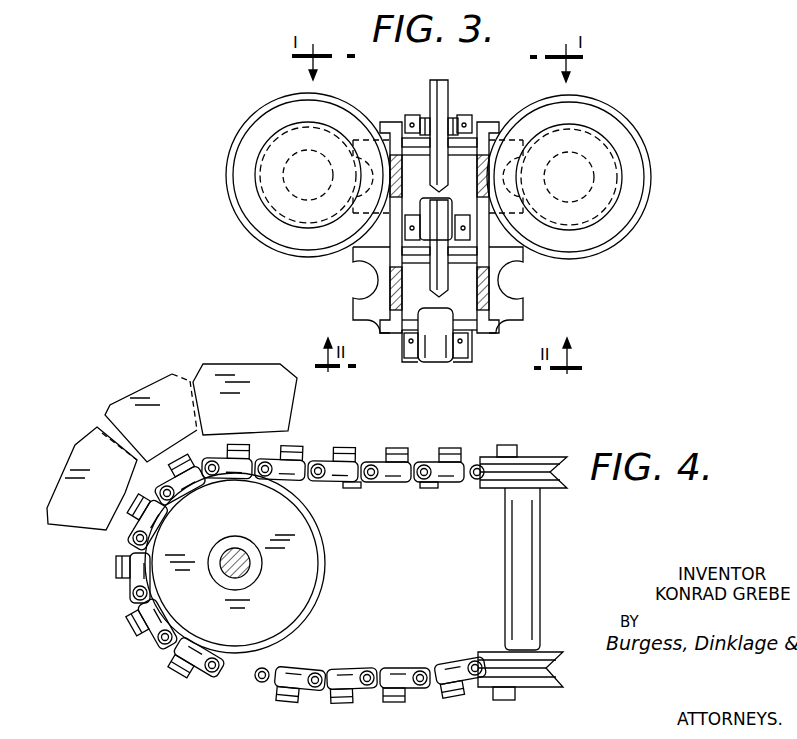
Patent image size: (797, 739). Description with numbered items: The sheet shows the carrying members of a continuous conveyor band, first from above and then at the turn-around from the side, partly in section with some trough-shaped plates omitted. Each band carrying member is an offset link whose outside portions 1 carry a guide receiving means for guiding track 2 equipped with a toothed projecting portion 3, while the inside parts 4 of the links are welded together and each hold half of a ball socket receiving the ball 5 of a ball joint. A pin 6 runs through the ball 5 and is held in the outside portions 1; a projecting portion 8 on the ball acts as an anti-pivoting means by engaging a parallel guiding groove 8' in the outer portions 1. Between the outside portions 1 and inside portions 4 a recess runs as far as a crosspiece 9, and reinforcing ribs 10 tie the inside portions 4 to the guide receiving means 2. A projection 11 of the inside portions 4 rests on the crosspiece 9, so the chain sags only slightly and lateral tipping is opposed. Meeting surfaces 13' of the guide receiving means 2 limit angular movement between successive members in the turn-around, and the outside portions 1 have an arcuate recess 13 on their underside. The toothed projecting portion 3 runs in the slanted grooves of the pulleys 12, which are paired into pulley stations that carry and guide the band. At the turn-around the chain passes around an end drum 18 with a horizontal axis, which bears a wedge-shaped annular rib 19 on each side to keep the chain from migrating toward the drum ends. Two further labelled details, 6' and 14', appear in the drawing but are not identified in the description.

In FIG. 3, the outside portions of the links 1 is at (388, 248).
In FIG. 4, the outside portions of the links 1 is at (482, 457).
In FIG. 3, the guide receiving means for guiding track 2 is at (482, 334).
In FIG. 4, the guide receiving means for guiding track 2 is at (298, 446).
In FIG. 3, the toothed projecting portion 3 is at (516, 320).
In FIG. 4, the toothed projecting portion 3 is at (448, 452).
In FIG. 4, the inside parts of the links 4 is at (275, 462).
In FIG. 3, the ball 5 is at (462, 120).
In FIG. 4, the ball 5 is at (268, 476).
In FIG. 3, the pin 6 is at (406, 165).
In FIG. 4, the pin 6 is at (343, 452).
In FIG. 3, the lower bearing block 6' is at (414, 364).
In FIG. 3, the projecting portion 8 is at (430, 159).
In FIG. 3, the guiding groove 8' is at (435, 347).
In FIG. 3, the crosspiece 9 is at (416, 189).
In FIG. 4, the crosspiece 9 is at (232, 476).
In FIG. 3, the reinforcing ribs 10 is at (402, 137).
In FIG. 3, the projection 11 is at (446, 97).
In FIG. 4, the projection 11 is at (253, 456).
In FIG. 3, the pulleys 12 is at (603, 126).
In FIG. 4, the pulleys 12 is at (528, 466).
In FIG. 4, the arcuate recess 13 is at (347, 501).
In FIG. 4, the meeting surfaces 13' is at (435, 501).
In FIG. 3, the sprocket recess 14' is at (366, 289).
In FIG. 4, the end drums 18 is at (170, 596).
In FIG. 4, the wedge-shaped annular rib 19 is at (312, 597).